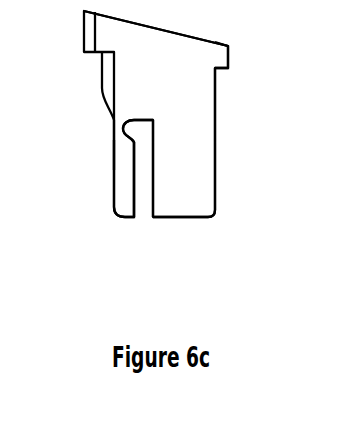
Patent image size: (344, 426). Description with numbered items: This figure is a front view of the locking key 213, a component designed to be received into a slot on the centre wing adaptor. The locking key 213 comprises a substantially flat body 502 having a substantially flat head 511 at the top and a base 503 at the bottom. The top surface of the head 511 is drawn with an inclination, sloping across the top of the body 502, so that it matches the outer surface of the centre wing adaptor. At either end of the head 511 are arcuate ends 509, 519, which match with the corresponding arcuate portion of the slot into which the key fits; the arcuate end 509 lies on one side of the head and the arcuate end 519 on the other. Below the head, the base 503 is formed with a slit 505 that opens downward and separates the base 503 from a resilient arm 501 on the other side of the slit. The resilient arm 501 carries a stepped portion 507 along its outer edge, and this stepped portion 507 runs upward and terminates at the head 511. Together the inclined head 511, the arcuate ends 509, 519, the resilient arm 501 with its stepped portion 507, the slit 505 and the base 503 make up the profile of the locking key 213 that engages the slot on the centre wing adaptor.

The locking key 213 is at (93, 247).
The resilient arm 501 is at (120, 243).
The substantially flat body 502 is at (172, 133).
The base 503 is at (188, 243).
The slit 505 is at (143, 243).
The stepped portion 507 is at (112, 195).
The arcuate end 509 is at (95, 63).
The head 511 is at (154, 72).
The arcuate end 519 is at (225, 115).